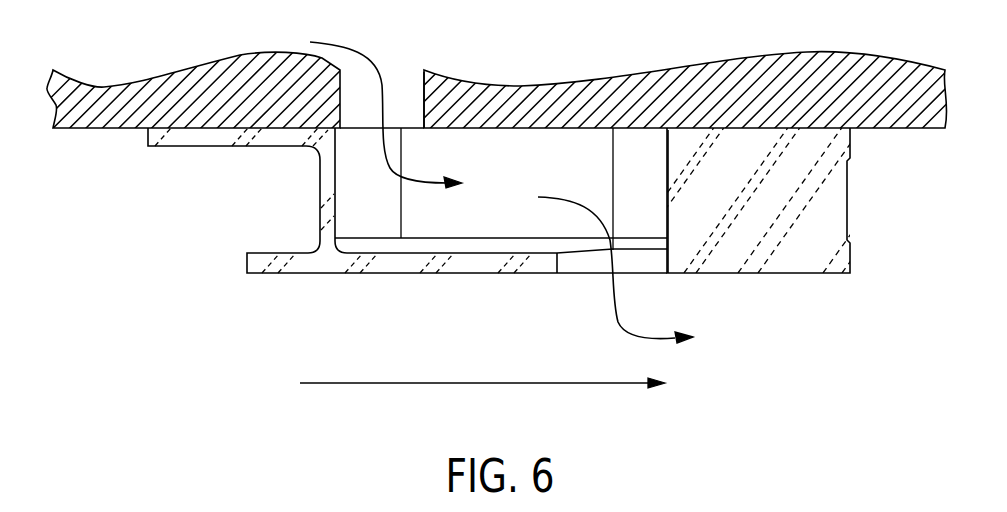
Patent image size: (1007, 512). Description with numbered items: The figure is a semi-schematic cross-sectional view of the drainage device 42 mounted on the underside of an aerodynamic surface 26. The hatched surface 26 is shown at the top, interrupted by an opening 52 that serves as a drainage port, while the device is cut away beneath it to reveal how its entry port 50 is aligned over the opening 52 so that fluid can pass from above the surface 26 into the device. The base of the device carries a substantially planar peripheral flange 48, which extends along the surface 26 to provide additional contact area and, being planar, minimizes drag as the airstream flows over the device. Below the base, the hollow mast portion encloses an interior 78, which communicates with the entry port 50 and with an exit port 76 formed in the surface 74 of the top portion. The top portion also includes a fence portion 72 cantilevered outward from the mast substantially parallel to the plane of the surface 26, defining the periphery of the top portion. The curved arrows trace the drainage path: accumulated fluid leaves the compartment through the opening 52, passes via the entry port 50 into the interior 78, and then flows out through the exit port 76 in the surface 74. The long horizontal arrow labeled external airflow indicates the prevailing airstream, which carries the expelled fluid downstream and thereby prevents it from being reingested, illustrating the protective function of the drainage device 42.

The aerodynamic surface 26 is at (100, 130).
The opening 52 is at (424, 93).
The peripheral flange 48 is at (168, 147).
The fence portion 72 is at (245, 262).
The exit port 76 is at (568, 265).
The interior 78 is at (543, 174).
The surface 74 is at (728, 280).
The entry port 50 is at (668, 147).
The drainage device 42 is at (312, 303).